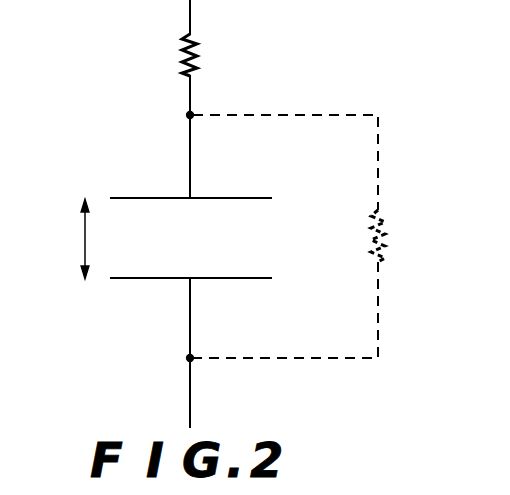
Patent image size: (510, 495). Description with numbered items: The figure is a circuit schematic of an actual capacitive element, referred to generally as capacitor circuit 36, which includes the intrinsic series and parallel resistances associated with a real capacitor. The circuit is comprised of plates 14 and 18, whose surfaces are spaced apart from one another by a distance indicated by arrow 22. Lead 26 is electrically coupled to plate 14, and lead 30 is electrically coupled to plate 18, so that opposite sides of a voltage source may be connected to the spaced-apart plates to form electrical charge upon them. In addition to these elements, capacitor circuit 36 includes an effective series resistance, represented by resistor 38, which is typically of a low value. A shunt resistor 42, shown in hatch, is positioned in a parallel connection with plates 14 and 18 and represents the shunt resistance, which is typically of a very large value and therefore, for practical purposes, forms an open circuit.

The plate 14 is at (115, 196).
The plate 18 is at (225, 280).
The arrow 22 is at (85, 228).
The lead 26 is at (192, 190).
The lead 30 is at (192, 388).
The capacitor circuit 36 is at (66, 117).
The resistor 38 is at (198, 51).
The shunt resistor 42 is at (385, 232).